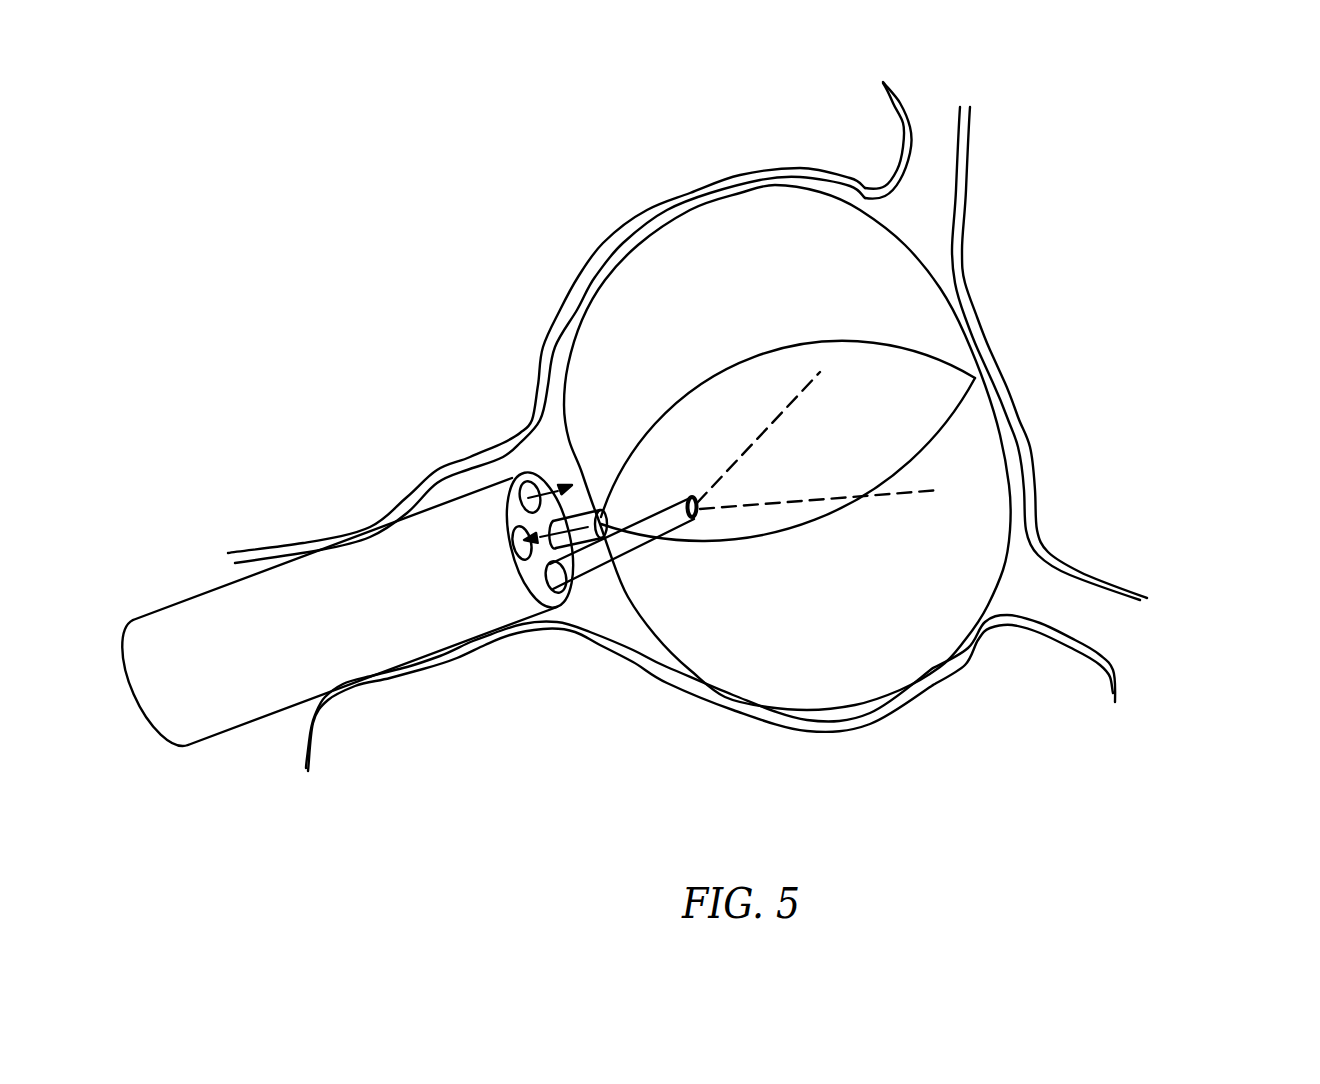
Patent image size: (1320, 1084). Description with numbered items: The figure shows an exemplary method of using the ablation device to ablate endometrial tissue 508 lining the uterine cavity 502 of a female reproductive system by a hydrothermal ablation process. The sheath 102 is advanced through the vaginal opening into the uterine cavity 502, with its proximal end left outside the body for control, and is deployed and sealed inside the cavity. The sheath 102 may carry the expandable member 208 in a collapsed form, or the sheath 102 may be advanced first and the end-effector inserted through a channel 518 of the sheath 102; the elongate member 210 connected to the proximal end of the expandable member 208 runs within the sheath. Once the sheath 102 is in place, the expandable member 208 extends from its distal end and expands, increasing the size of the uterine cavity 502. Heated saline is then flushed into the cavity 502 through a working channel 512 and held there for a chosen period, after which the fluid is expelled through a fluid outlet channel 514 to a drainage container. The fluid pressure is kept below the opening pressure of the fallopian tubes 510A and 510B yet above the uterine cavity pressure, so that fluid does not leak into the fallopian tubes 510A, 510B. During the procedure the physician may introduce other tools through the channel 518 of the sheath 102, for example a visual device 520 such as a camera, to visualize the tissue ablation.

The sheath 102 is at (204, 718).
The expandable member 208 is at (857, 713).
The elongate member 210 is at (604, 545).
The uterine cavity 502 is at (978, 443).
The endometrial tissue 508 is at (578, 258).
The fallopian tube 510A is at (927, 158).
The fallopian tube 510B is at (1134, 645).
The working channel 512 is at (527, 478).
The fluid outlet channel 514 is at (520, 528).
The channel 518 is at (563, 606).
The visual device 520 is at (642, 550).